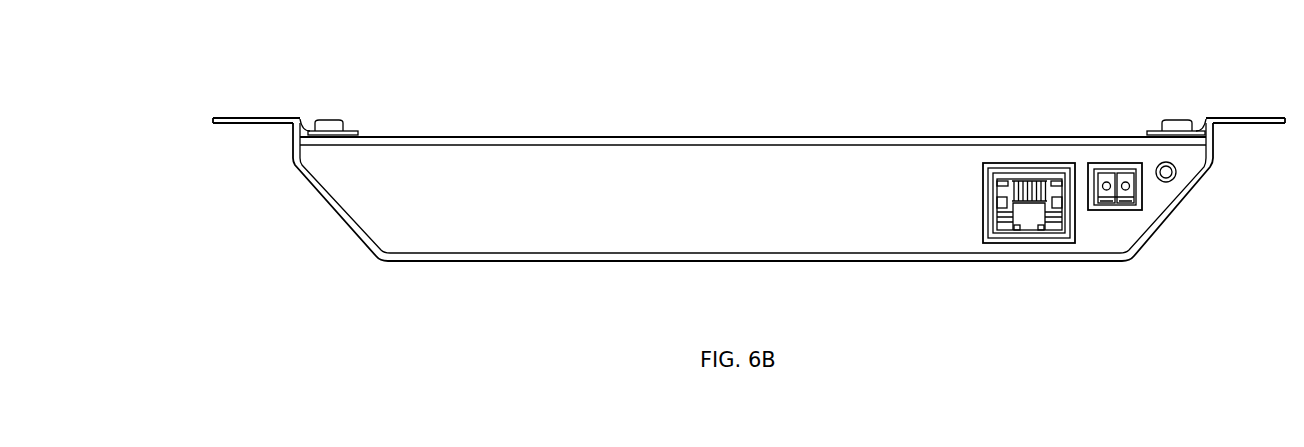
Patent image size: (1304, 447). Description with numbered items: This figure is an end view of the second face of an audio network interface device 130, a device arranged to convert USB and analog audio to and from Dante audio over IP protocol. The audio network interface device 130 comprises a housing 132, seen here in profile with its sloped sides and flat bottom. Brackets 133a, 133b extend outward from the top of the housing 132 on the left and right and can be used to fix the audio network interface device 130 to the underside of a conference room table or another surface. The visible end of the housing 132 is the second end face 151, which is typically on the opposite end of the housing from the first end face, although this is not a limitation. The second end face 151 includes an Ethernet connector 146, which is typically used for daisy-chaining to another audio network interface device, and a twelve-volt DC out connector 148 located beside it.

The audio network interface device 130 is at (308, 218).
The housing 132 is at (386, 262).
The bracket 133a is at (238, 118).
The bracket 133b is at (1230, 118).
The second end face 151 is at (370, 152).
The Ethernet connector 146 is at (1025, 233).
The 12 VDC out connector 148 is at (1132, 207).